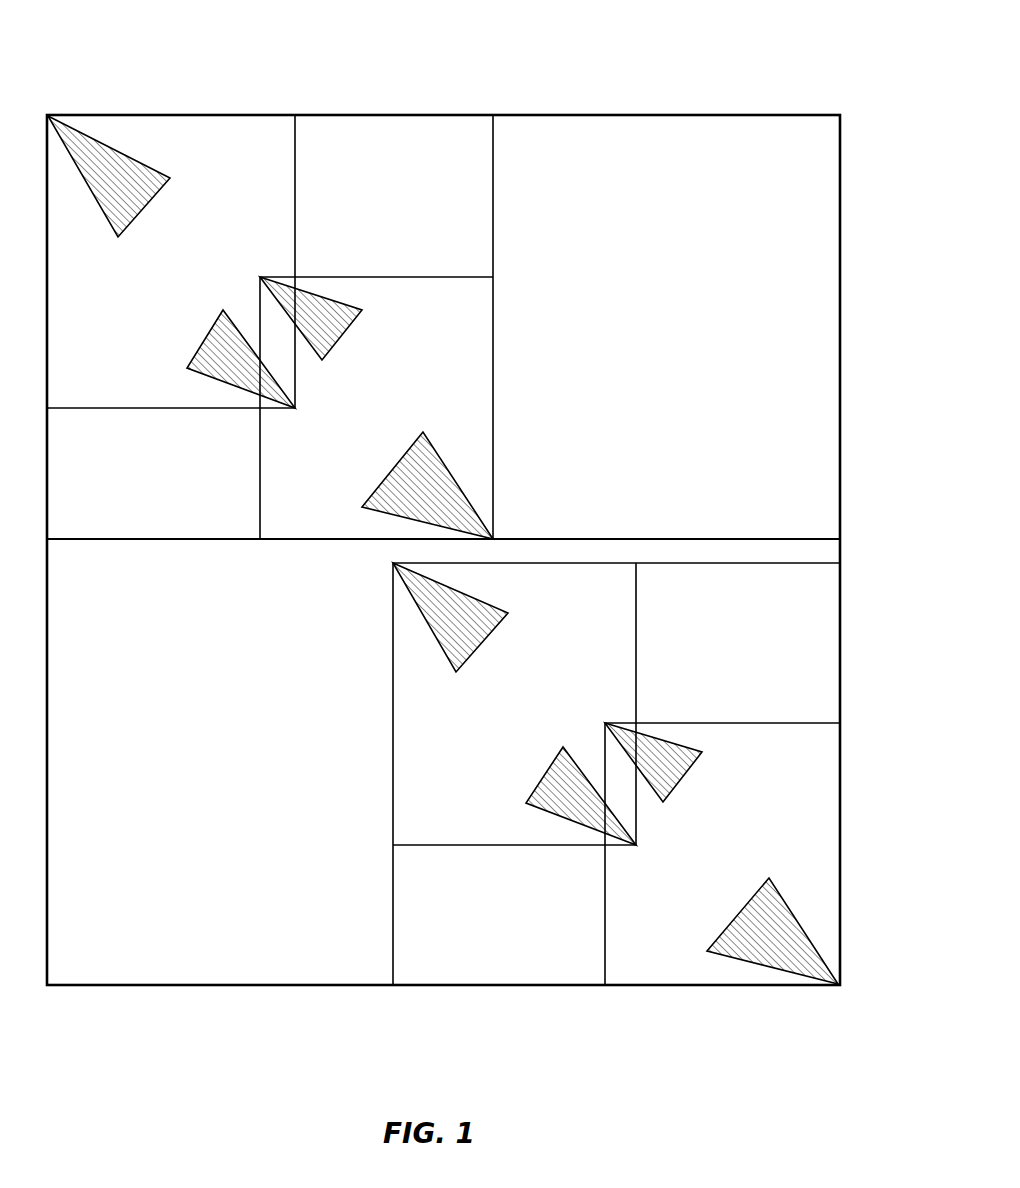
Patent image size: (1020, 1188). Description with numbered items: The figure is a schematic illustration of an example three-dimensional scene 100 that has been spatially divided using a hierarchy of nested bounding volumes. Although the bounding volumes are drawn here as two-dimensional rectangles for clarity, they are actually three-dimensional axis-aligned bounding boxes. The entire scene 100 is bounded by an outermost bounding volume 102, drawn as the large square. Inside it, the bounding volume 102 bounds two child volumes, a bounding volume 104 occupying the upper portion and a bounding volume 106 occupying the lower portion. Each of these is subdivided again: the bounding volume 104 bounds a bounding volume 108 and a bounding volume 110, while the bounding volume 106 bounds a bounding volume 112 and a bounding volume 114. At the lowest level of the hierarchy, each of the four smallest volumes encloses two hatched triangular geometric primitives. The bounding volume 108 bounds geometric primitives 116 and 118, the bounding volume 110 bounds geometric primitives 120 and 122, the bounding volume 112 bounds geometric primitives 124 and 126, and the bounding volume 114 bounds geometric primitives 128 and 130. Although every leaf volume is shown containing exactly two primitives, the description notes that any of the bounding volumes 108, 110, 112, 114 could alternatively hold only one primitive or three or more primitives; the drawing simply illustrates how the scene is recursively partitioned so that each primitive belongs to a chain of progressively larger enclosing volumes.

The three-dimensional scene 100 is at (753, 62).
The bounding volume 102 is at (600, 115).
The bounding volume 104 is at (494, 202).
The bounding volume 106 is at (392, 923).
The bounding volume 108 is at (296, 212).
The bounding volume 110 is at (260, 472).
The bounding volume 112 is at (636, 653).
The bounding volume 114 is at (605, 923).
The geometric primitive 116 is at (145, 213).
The geometric primitive 118 is at (205, 333).
The geometric primitive 120 is at (343, 338).
The geometric primitive 122 is at (393, 465).
The geometric primitive 124 is at (485, 647).
The geometric primitive 126 is at (548, 770).
The geometric primitive 128 is at (687, 777).
The geometric primitive 130 is at (737, 912).